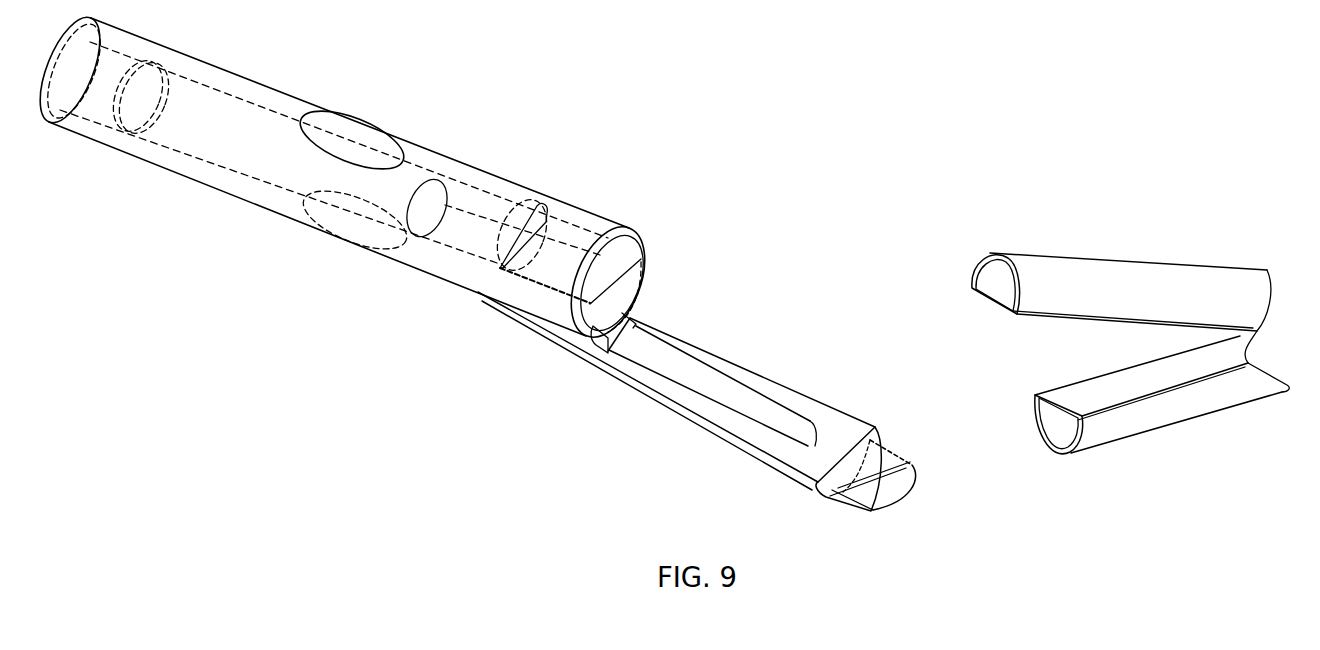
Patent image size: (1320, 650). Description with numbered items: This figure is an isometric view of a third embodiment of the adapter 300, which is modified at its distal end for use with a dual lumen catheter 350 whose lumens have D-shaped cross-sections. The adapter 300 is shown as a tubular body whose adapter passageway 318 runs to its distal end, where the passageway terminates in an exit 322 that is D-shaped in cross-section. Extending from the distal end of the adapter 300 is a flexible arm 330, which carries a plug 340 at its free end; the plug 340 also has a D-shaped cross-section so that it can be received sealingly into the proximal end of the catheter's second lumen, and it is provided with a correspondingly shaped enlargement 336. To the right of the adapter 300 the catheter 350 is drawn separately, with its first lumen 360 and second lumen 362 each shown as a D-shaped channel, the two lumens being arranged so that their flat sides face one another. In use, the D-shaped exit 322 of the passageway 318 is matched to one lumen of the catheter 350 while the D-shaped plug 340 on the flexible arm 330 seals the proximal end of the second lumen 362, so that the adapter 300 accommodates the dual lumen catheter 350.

The adapter 300 is at (390, 95).
The adapter passageway 318 is at (614, 267).
The exit 322 is at (644, 237).
The flexible arm 330 is at (633, 387).
The enlargement 336 is at (799, 488).
The plug 340 is at (915, 457).
The catheter 350 is at (1148, 231).
The first lumen 360 is at (989, 277).
The second lumen 362 is at (1063, 429).